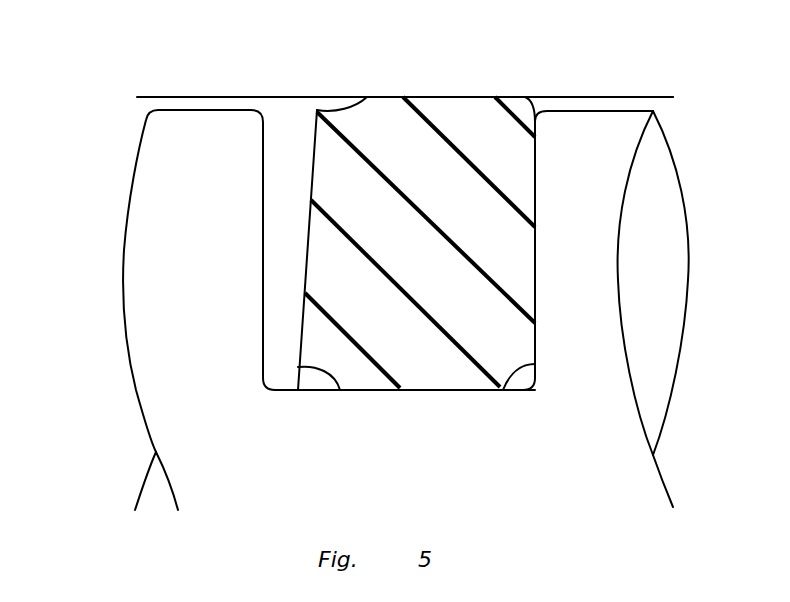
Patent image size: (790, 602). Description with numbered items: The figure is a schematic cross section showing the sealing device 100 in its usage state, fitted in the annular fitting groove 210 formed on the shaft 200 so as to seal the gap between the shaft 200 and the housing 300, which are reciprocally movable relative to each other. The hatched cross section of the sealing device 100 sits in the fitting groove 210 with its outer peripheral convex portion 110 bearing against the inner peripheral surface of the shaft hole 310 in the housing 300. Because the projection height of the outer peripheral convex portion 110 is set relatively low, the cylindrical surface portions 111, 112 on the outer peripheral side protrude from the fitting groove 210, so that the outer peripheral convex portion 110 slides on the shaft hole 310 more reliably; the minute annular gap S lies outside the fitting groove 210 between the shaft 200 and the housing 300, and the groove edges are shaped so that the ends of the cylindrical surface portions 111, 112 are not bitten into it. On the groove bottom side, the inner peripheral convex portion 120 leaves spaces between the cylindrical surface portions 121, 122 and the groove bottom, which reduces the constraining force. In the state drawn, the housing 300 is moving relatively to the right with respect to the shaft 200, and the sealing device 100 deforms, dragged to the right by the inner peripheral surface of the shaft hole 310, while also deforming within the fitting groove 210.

The sealing device 100 is at (423, 256).
The outer peripheral convex portion 110 is at (450, 97).
The cylindrical surface portion 111 is at (341, 107).
The cylindrical surface portion 112 is at (540, 120).
The inner peripheral convex portion 120 is at (412, 392).
The cylindrical surface portion 121 is at (318, 392).
The cylindrical surface portion 122 is at (527, 393).
The shaft 200 is at (406, 310).
The fitting groove 210 is at (263, 204).
The housing 300 is at (405, 69).
The shaft hole 310 is at (188, 97).
The annular gap S is at (567, 105).